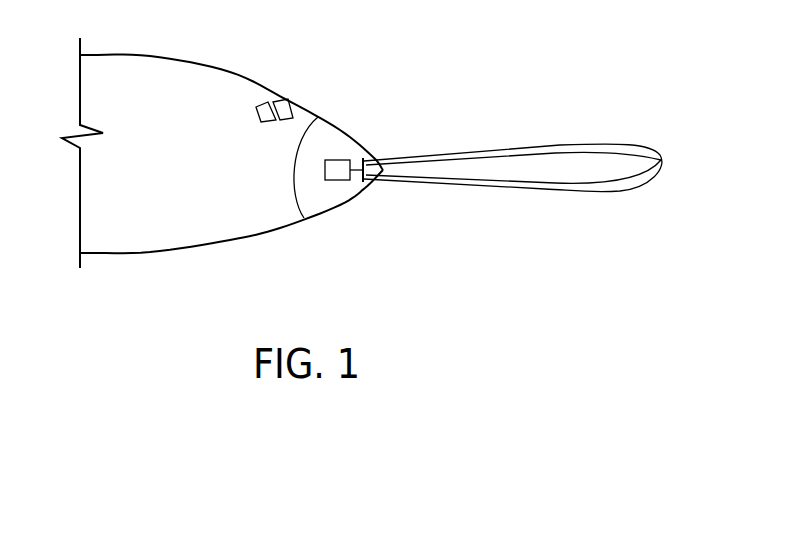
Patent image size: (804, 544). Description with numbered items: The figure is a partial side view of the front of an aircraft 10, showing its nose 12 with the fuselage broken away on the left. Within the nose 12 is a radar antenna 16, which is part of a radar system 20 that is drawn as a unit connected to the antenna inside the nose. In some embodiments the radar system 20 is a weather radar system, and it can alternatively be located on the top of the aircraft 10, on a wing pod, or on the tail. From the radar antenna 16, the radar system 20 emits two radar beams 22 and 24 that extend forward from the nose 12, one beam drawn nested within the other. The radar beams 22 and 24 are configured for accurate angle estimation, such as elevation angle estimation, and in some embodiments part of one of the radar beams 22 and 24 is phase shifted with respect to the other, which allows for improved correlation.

The aircraft 10 is at (238, 56).
The nose 12 is at (340, 128).
The radar antenna 16 is at (368, 162).
The radar system 20 is at (332, 180).
The radar beam 22 is at (612, 143).
The radar beam 24 is at (560, 187).